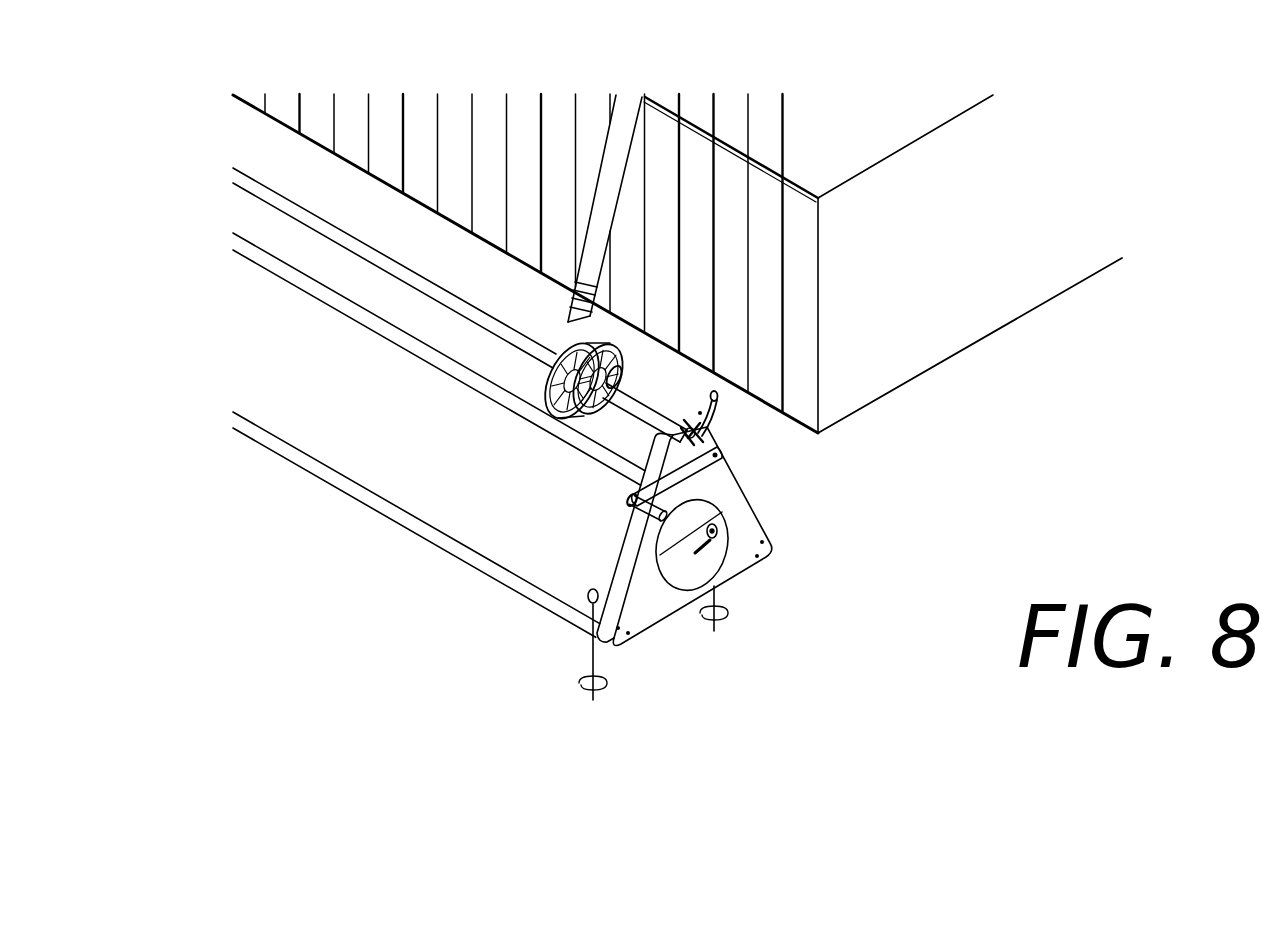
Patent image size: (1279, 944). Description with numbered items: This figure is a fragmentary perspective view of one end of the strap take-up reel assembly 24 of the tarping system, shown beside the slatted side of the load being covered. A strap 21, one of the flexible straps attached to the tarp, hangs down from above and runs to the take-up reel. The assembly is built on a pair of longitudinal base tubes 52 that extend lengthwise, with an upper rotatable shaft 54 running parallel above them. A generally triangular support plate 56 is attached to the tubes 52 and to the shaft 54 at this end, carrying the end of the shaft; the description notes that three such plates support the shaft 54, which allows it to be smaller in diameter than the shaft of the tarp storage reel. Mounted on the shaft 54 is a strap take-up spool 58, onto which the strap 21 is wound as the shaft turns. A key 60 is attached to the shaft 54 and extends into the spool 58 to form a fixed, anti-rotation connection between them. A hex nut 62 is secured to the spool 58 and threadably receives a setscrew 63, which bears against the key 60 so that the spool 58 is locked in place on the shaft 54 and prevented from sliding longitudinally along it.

The strap 21 is at (608, 143).
The strap take-up reel assembly 24 is at (775, 541).
The longitudinal base tube 52 is at (260, 262).
The rotatable shaft 54 is at (257, 197).
The support plate 56 is at (613, 537).
The strap take-up spool 58 is at (560, 347).
The key 60 is at (593, 406).
The hex nut 62 is at (614, 364).
The setscrew 63 is at (620, 387).